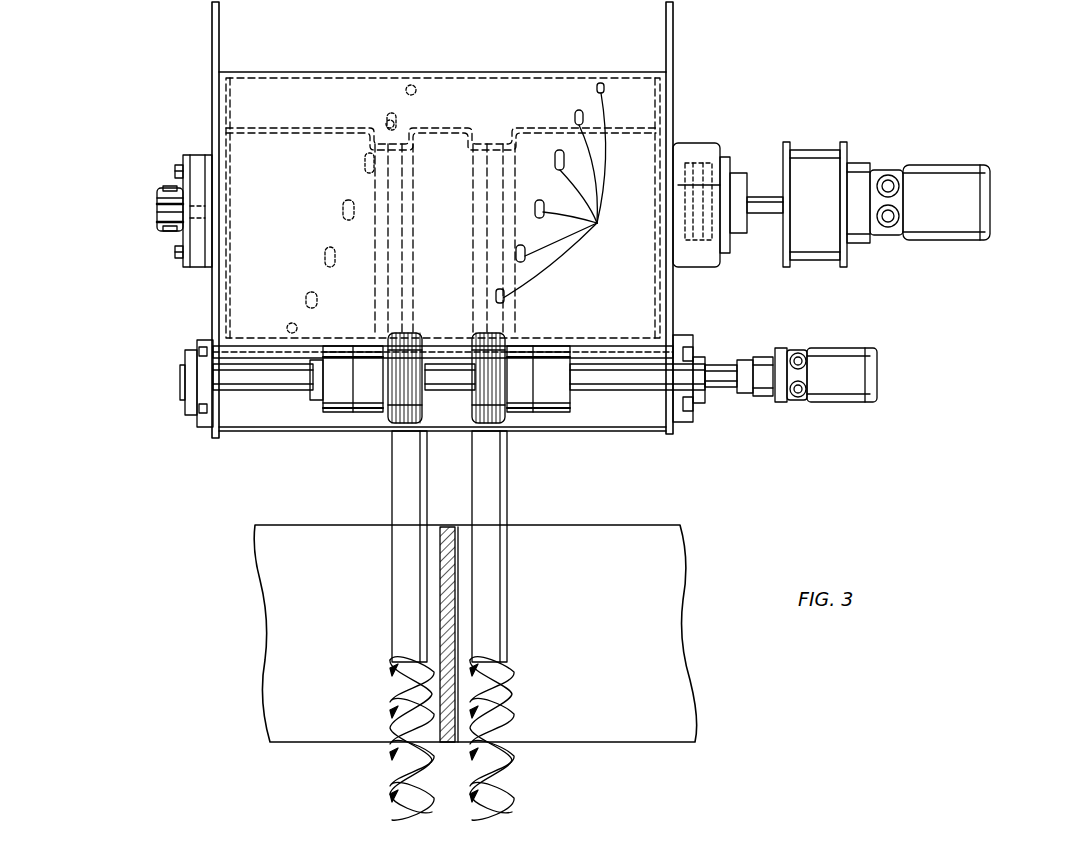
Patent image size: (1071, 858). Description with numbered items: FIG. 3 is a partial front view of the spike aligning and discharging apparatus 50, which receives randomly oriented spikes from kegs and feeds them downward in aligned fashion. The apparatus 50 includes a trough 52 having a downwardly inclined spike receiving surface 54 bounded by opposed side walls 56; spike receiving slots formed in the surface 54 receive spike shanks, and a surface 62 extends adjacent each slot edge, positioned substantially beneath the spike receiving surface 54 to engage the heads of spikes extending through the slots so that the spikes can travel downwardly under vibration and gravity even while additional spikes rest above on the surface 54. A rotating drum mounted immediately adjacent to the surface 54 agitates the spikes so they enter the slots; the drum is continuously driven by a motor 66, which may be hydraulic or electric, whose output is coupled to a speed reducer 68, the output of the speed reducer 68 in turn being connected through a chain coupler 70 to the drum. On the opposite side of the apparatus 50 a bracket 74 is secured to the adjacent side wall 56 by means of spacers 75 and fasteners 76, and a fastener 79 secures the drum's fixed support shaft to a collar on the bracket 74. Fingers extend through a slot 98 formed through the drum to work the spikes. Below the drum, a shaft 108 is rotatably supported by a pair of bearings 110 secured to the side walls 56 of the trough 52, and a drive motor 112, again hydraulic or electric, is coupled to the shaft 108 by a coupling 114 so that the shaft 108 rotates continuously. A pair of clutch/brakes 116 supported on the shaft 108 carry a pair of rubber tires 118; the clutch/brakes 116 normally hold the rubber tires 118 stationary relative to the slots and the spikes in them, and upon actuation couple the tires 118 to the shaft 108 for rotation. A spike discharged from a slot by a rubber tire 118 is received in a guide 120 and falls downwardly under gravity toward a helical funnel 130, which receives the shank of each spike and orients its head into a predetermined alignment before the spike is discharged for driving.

The spike aligning and discharging apparatus 50 is at (178, 20).
The trough 52 is at (364, 38).
The spike receiving surface 54 is at (532, 128).
The side walls 56 is at (212, 44).
The surface 62 is at (505, 140).
The motor 66 is at (914, 160).
The speed reducer 68 is at (835, 142).
The chain coupler 70 is at (688, 150).
The bracket 74 is at (180, 186).
The spacers 75 is at (198, 155).
The fasteners 76 is at (174, 168).
The fastener 79 is at (163, 191).
The slot 98 is at (561, 193).
The shaft 108 is at (262, 392).
The bearings 110 is at (200, 375).
The drive motor 112 is at (818, 345).
The coupling 114 is at (765, 352).
The clutch/brakes 116 is at (366, 413).
The rubber tires 118 is at (394, 336).
The guide 120 is at (390, 499).
The helical funnel 130 is at (385, 790).